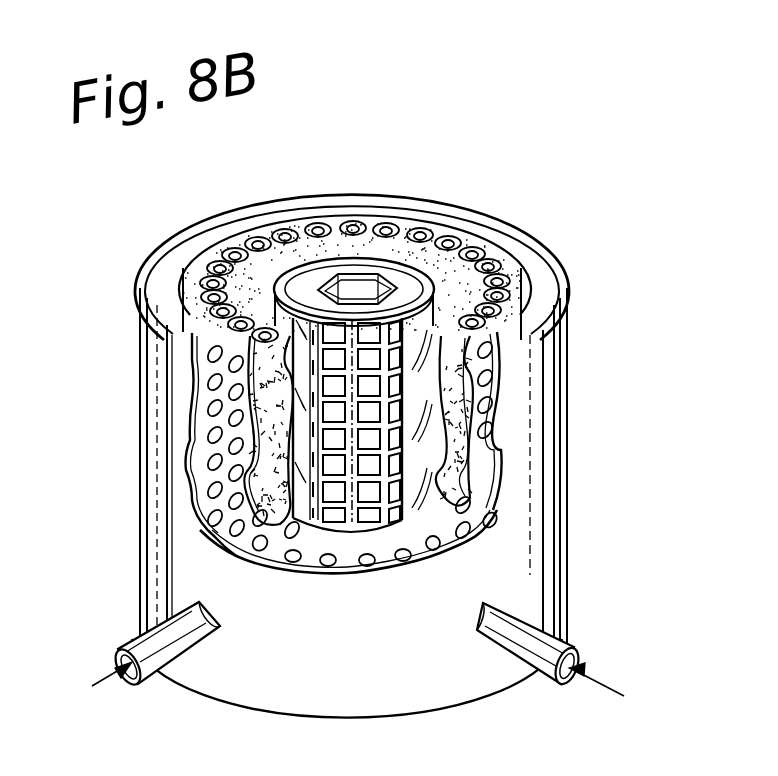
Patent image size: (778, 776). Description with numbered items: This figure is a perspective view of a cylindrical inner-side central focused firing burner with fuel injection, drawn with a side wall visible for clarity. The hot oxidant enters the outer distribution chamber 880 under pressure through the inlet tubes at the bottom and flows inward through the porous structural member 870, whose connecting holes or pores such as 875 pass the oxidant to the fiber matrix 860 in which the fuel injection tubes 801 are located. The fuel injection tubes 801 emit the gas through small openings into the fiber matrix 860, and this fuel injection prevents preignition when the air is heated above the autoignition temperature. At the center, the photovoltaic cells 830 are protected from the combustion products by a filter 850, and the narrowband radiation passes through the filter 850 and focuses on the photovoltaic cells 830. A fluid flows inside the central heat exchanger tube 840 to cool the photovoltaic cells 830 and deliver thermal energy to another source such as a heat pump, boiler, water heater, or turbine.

The fuel injection tube 801 is at (363, 223).
The photovoltaic cell 830 is at (363, 525).
The heat exchanger tube 840 is at (307, 279).
The filter 850 is at (453, 252).
The fiber matrix 860 is at (207, 274).
The porous structural member 870 is at (277, 553).
The hole or pore 875 is at (326, 562).
The outer distribution chamber 880 is at (538, 277).